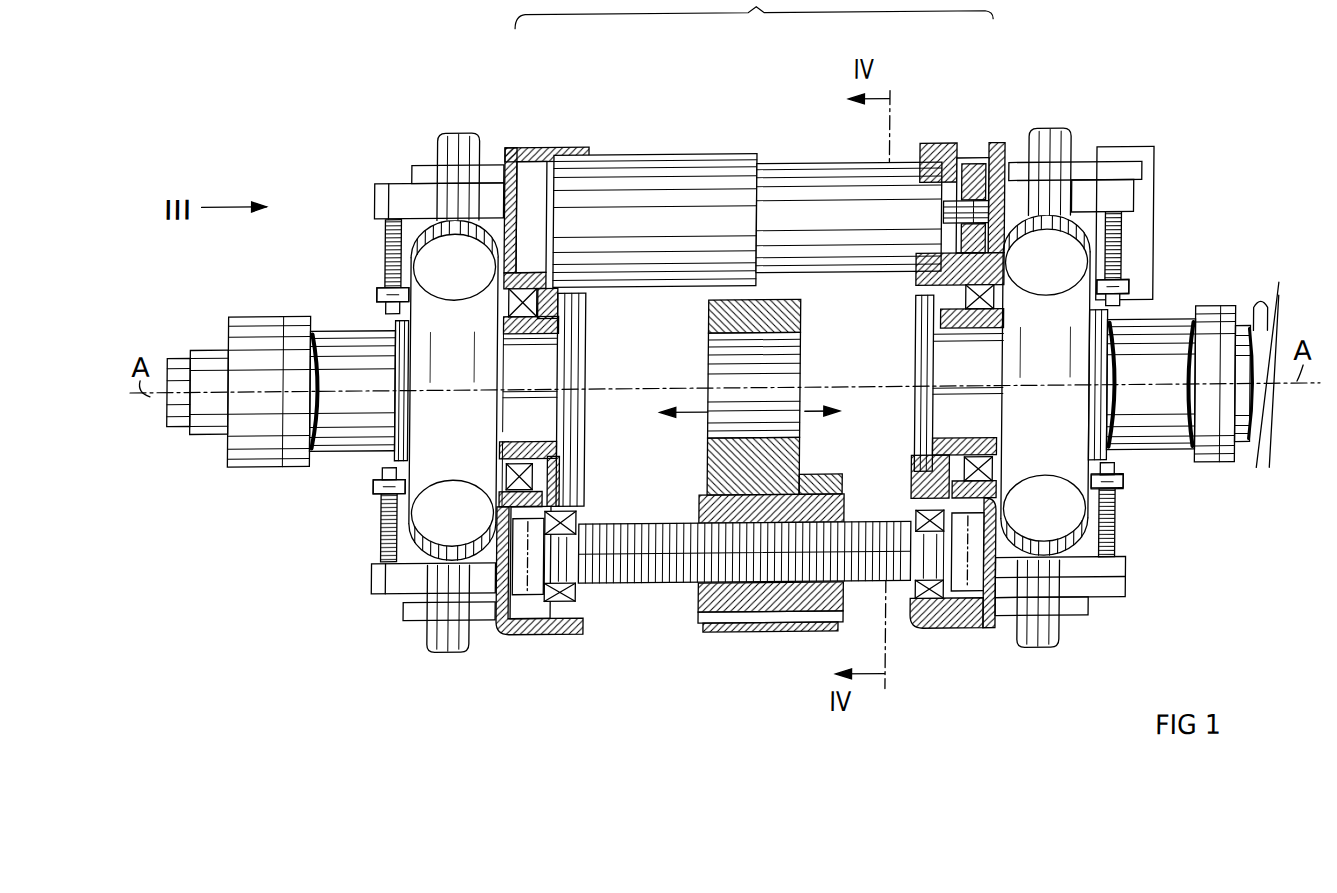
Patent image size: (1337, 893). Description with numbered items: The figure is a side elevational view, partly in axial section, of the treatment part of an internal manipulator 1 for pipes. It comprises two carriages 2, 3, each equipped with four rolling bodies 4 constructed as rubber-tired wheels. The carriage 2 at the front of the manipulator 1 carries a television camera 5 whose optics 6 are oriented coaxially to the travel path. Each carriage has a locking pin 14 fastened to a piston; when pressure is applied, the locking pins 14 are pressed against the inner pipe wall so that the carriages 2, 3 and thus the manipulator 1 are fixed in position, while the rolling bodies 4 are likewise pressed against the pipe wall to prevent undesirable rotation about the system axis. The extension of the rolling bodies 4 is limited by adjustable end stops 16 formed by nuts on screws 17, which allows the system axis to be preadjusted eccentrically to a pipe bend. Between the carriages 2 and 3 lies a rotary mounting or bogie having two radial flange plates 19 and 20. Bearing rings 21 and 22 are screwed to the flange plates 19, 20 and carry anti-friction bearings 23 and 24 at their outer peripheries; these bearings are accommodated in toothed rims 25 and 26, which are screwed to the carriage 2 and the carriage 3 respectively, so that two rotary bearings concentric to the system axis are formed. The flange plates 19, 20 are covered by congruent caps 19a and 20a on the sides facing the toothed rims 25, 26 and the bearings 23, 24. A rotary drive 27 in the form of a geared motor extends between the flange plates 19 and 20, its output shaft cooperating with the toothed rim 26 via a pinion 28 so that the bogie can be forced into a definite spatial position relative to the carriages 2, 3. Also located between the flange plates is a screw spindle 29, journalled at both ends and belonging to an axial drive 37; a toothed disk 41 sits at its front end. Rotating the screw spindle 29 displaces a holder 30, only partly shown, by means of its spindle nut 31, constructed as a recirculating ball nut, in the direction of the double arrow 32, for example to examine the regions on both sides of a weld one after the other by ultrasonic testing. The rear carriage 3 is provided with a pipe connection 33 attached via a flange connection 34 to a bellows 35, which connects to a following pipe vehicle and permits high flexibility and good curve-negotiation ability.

The internal manipulator 1 is at (1133, 54).
The carriage 2 is at (458, 369).
The carriage 3 is at (1053, 363).
The rolling bodies 4 is at (452, 295).
The television camera 5 is at (258, 313).
The optics 6 is at (205, 430).
The locking pin 14 is at (447, 133).
The end stops 16 is at (372, 289).
The screws 17 is at (384, 243).
The flange plate 19 is at (562, 633).
The cap 19a is at (525, 146).
The flange plate 20 is at (926, 630).
The cap 20a is at (970, 630).
The bearing ring 21 is at (573, 352).
The bearing ring 22 is at (994, 355).
The anti-friction bearing 23 is at (520, 320).
The anti-friction bearing 24 is at (990, 306).
The toothed rim 25 is at (522, 285).
The toothed rim 26 is at (1006, 278).
The rotary drive 27 is at (738, 160).
The pinion 28 is at (963, 166).
The screw spindle 29 is at (645, 583).
The holder 30 is at (706, 457).
The spindle nut 31 is at (768, 600).
The double arrow 32 is at (805, 412).
The pipe connection 33 is at (1172, 440).
The flange connection 34 is at (1210, 310).
The bellows 35 is at (1262, 410).
The axial drive 37 is at (712, 658).
The toothed disk 41 is at (532, 598).